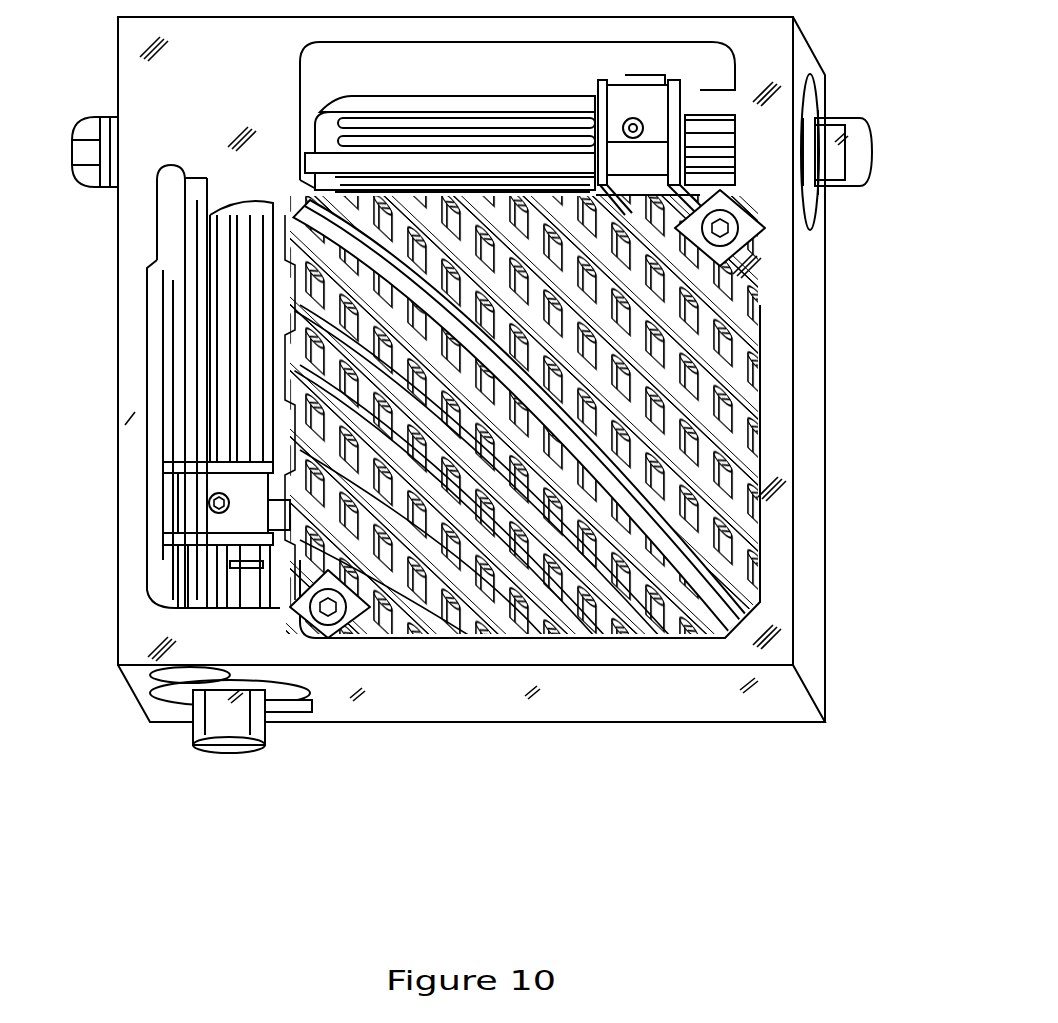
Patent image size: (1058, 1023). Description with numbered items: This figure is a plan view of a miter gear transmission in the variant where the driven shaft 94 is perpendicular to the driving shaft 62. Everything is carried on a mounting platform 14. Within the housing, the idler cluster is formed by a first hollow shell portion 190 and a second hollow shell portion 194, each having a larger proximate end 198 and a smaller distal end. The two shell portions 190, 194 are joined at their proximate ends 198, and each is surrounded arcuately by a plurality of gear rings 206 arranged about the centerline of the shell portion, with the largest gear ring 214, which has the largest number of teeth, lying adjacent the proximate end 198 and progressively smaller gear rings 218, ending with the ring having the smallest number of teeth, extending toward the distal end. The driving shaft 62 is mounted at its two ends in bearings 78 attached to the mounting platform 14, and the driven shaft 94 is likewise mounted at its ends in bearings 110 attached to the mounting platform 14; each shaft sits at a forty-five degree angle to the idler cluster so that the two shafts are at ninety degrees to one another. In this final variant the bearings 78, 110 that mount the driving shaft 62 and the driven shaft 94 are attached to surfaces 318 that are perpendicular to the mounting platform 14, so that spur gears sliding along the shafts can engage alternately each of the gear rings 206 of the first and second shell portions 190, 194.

The mounting platform 14 is at (785, 693).
The bearings 78 is at (112, 138).
The driving shaft 62 is at (845, 136).
The surfaces perpendicular to the mounting platform 318 is at (810, 244).
The smaller gear rings 218 is at (758, 299).
The second hollow shell portion 194 is at (745, 318).
The gear rings 206 is at (765, 440).
The proximate end 198 is at (680, 554).
The largest gear ring 214 is at (760, 577).
The first hollow shell portion 190 is at (407, 632).
The bearings 110 is at (170, 697).
The driven shaft 94 is at (253, 733).